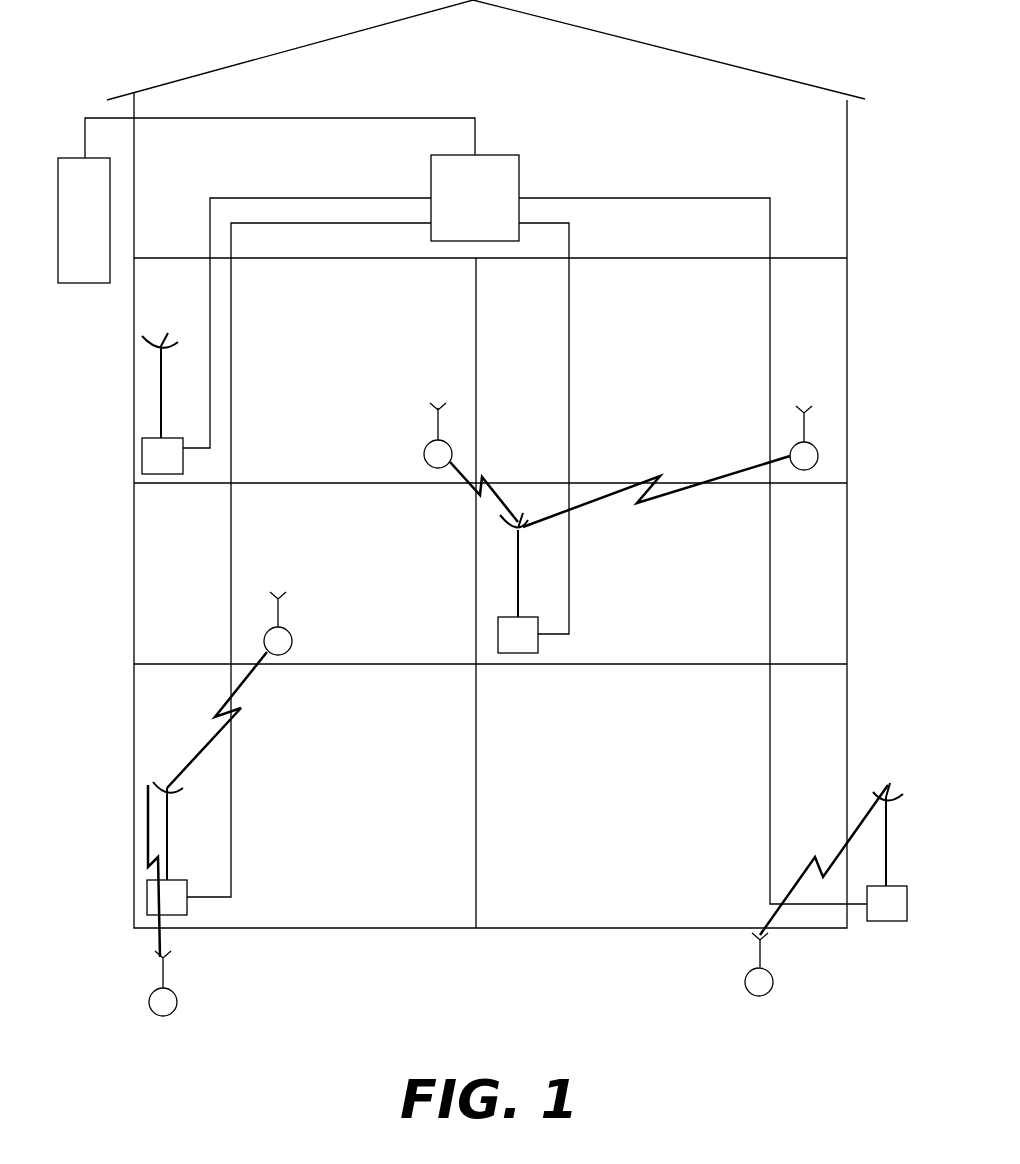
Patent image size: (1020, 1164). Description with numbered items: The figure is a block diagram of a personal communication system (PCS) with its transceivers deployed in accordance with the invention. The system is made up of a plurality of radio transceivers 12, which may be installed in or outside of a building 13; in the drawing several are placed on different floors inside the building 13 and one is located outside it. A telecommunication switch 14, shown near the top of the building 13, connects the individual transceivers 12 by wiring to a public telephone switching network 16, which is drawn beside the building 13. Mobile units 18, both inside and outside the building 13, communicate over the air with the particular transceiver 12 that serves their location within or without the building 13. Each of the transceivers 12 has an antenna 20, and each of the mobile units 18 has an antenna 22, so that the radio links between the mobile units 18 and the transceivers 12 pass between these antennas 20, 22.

The radio transceiver 12 is at (158, 465).
The building 13 is at (847, 152).
The telecommunication switch 14 is at (480, 171).
The public telephone switching network 16 is at (82, 283).
The mobile unit 18 is at (423, 452).
The antenna 20 is at (173, 343).
The antenna 22 is at (435, 408).